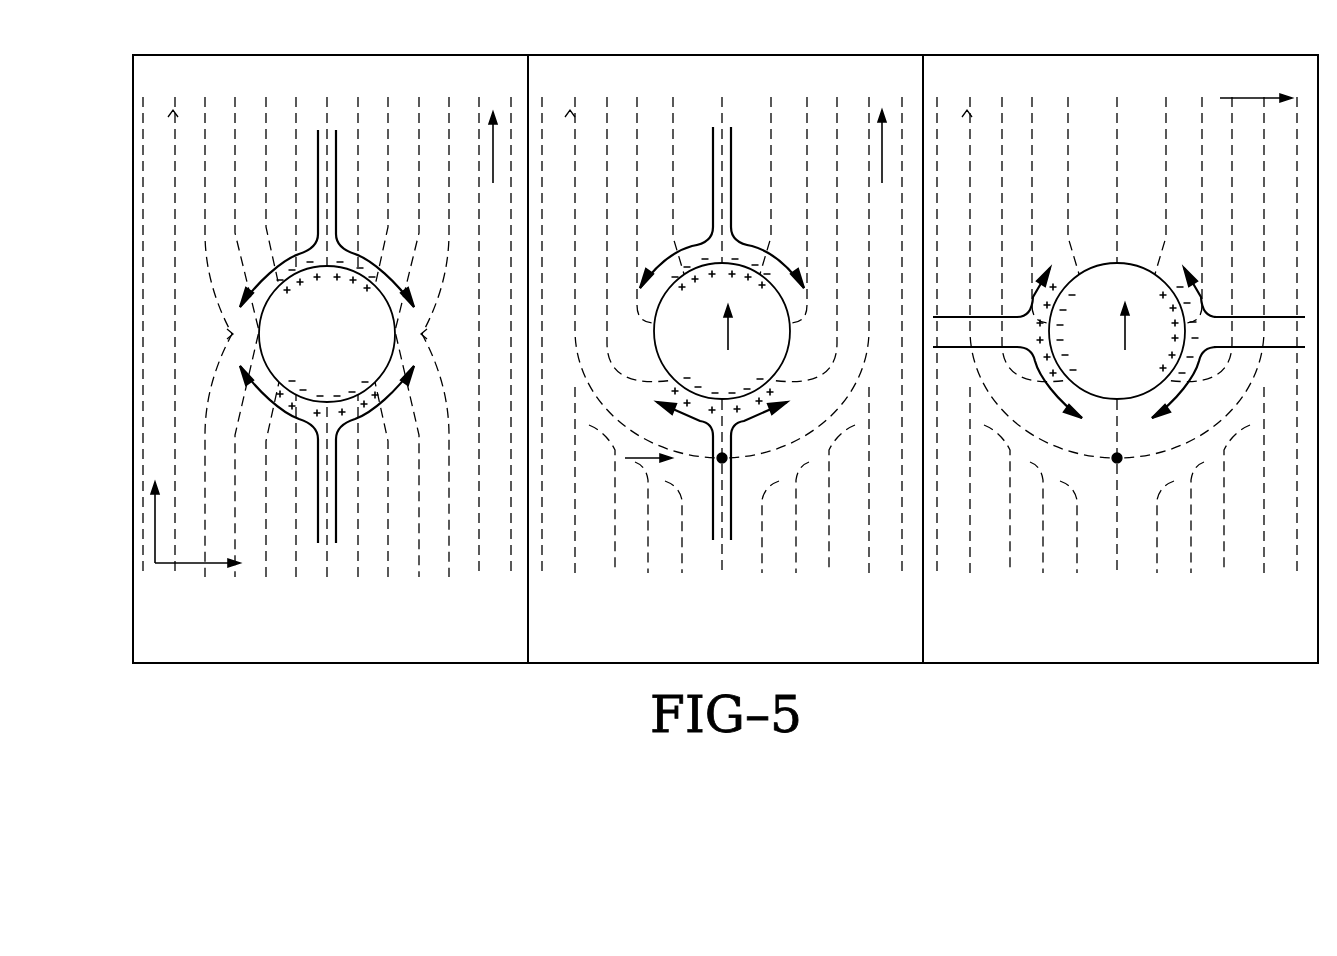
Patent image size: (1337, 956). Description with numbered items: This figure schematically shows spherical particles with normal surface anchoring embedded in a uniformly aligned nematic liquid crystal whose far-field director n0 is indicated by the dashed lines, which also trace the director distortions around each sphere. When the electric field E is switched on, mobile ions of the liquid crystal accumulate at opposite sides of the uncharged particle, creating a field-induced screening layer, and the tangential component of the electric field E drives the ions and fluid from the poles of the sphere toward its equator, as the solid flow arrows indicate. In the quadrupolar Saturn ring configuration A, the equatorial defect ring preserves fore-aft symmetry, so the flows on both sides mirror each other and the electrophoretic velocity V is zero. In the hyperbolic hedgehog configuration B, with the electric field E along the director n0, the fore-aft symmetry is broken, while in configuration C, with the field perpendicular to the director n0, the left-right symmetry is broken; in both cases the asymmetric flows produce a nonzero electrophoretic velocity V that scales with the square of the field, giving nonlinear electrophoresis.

The quadrupolar (Saturn ring) configuration panel A is at (327, 373).
The dipolar (hyperbolic hedgehog) configuration with field along director B is at (721, 372).
The dipolar configuration with field perpendicular to director C is at (1119, 372).
The electric field E is at (880, 138).
The electrophoretic velocity V is at (717, 327).
The director n0 is at (577, 131).